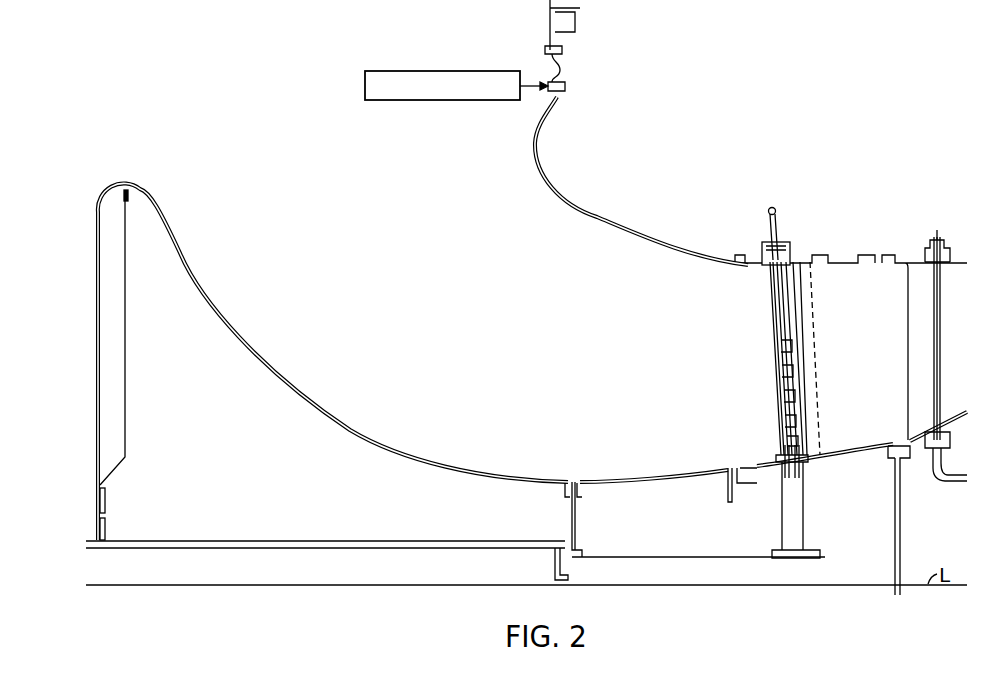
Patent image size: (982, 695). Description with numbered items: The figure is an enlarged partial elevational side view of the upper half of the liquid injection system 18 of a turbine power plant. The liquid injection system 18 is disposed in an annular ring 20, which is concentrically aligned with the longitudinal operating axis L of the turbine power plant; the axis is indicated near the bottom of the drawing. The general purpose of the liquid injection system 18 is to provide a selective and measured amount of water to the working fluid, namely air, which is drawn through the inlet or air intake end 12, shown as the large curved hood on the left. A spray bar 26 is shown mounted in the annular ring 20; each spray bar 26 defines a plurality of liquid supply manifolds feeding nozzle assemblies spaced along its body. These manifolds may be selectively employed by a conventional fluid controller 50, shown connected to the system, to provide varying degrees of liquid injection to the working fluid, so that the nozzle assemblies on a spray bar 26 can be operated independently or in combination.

The air intake end 12 is at (129, 182).
The liquid injection system 18 is at (649, 192).
The annular ring 20 is at (786, 270).
The spray bar 26 is at (754, 376).
The fluid controller 50 is at (420, 70).